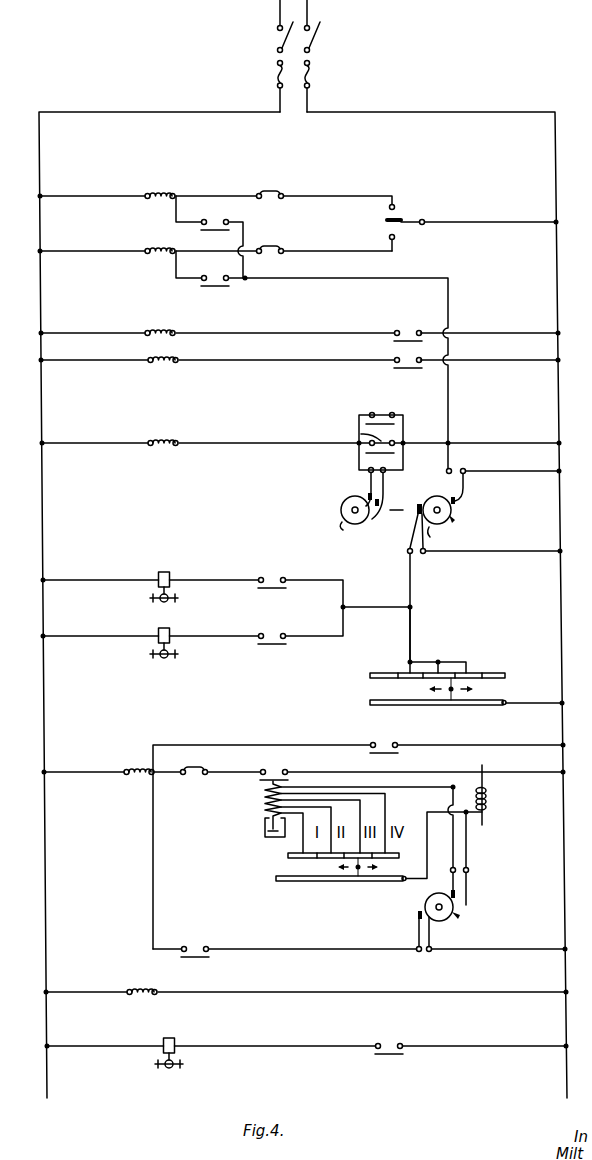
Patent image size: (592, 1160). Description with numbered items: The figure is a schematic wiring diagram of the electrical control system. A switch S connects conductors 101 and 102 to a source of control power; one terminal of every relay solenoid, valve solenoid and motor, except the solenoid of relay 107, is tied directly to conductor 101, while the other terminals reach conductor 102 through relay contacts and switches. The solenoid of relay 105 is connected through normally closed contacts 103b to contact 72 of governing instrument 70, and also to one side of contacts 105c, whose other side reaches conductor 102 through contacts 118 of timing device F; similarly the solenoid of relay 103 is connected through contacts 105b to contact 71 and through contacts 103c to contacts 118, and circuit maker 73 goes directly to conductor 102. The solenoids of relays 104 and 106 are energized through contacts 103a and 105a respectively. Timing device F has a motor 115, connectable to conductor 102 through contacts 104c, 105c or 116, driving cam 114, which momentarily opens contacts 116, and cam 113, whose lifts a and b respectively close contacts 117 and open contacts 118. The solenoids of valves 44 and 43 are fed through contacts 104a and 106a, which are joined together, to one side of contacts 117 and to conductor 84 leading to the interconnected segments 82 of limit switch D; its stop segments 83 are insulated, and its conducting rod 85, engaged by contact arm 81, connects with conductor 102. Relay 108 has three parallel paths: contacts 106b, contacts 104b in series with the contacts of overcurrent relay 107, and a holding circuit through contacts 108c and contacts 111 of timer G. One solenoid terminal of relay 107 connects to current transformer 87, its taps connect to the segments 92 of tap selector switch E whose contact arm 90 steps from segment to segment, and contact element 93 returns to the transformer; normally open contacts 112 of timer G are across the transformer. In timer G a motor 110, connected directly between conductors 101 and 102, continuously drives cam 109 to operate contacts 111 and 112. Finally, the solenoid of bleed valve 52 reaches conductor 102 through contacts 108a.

The switch S is at (306, 56).
The conductor 101 is at (147, 595).
The conductor 102 is at (446, 595).
The relay 105 is at (159, 184).
The normally closed contacts 103b is at (272, 184).
The governing instrument 70 is at (393, 192).
The contact 72 is at (395, 207).
The circuit maker 73 is at (459, 223).
The contact 71 is at (395, 237).
The relay 103 is at (159, 239).
The normally closed contacts 105b is at (272, 240).
The normally open contacts 105c is at (360, 436).
The normally open contacts 103c is at (312, 347).
The relay 104 is at (159, 321).
The normally open contacts 103a is at (409, 323).
The relay 106 is at (162, 371).
The normally open contacts 105a is at (409, 375).
The motor 115 is at (162, 431).
The timing device F is at (320, 488).
The normally open contacts 104c is at (380, 432).
The contacts 116 is at (360, 488).
The cam 114 is at (356, 521).
The cam 113 is at (444, 522).
The cam lift a is at (420, 503).
The cam lift b is at (459, 527).
The contacts 117 is at (472, 588).
The contacts 118 is at (504, 475).
The valve 44 is at (164, 577).
The normally open contacts 104a is at (273, 571).
The valve 43 is at (164, 633).
The normally open contacts 106a is at (273, 627).
The conductor 84 is at (421, 640).
The stop segments 83 is at (456, 674).
The segments 82 is at (471, 674).
The limit switch D is at (344, 694).
The conducting rod 85 is at (409, 706).
The contact arm 81 is at (456, 698).
The relay 108 is at (137, 761).
The normally open contacts 106b is at (359, 846).
The normally closed contacts 104b is at (195, 783).
The overcurrent relay 107 is at (344, 812).
The current transformer 87 is at (495, 795).
The segments 92 is at (290, 858).
The contact element 93 is at (305, 882).
The tap selector switch E is at (316, 904).
The contact arm 90 is at (352, 875).
The contacts 112 is at (465, 845).
The cam 109 is at (455, 913).
The timing apparatus G is at (320, 963).
The contacts 111 is at (412, 934).
The normally open contacts 108c is at (360, 942).
The motor 110 is at (141, 980).
The bleed valve 52 is at (169, 1064).
The normally open contacts 108a is at (390, 1061).